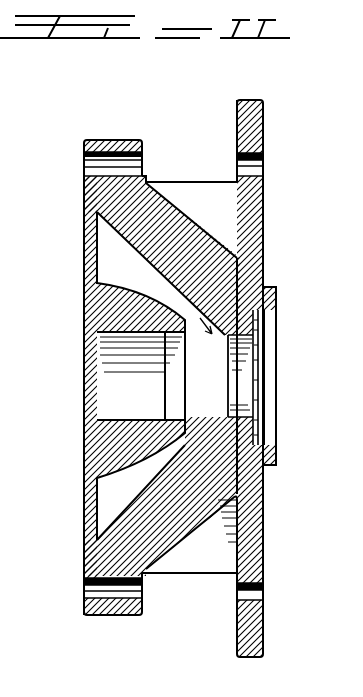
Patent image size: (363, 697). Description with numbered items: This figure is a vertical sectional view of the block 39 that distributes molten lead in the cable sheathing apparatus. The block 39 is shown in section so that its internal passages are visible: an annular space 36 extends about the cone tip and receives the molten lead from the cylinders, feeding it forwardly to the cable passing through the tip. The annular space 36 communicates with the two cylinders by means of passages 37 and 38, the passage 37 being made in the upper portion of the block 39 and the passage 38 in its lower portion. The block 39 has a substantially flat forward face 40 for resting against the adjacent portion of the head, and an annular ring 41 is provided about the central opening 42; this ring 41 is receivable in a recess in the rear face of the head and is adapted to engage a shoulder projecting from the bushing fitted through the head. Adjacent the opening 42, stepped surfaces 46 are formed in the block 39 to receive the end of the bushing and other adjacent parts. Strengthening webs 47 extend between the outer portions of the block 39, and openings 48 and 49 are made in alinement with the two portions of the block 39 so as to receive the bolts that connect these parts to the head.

The annular space 36 is at (262, 282).
The passage 37 is at (97, 265).
The passage 38 is at (110, 507).
The block 39 is at (103, 140).
The forward face 40 is at (265, 210).
The annular ring 41 is at (278, 298).
The central opening 42 is at (243, 403).
The stepped surfaces 46 is at (262, 355).
The strengthening webs 47 is at (190, 182).
The opening 48 is at (84, 168).
The opening 49 is at (256, 165).